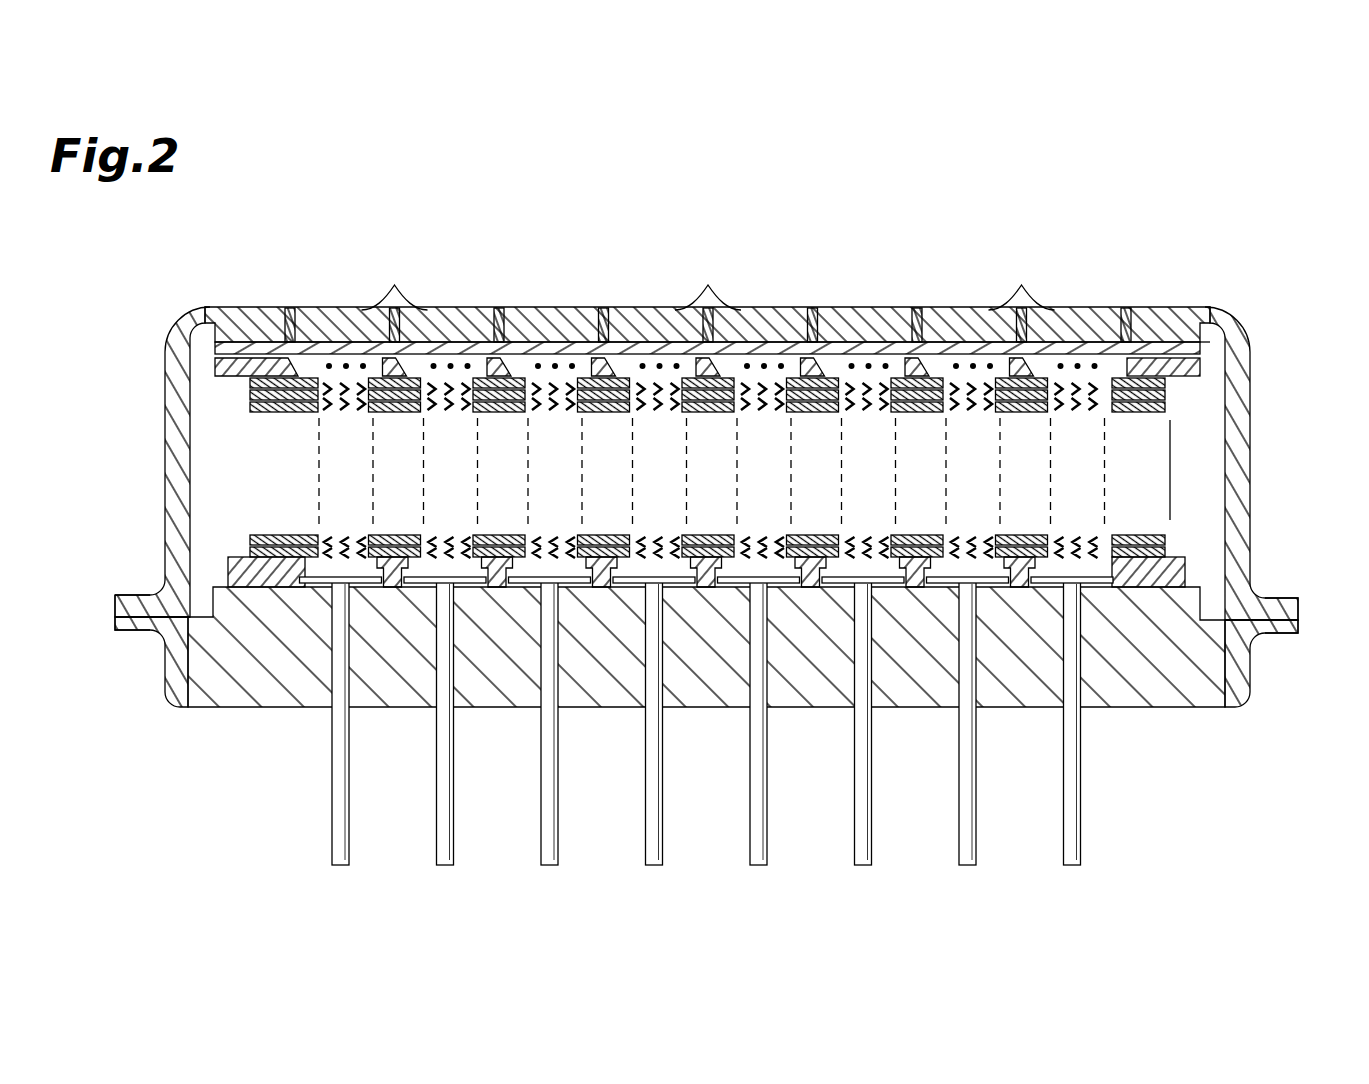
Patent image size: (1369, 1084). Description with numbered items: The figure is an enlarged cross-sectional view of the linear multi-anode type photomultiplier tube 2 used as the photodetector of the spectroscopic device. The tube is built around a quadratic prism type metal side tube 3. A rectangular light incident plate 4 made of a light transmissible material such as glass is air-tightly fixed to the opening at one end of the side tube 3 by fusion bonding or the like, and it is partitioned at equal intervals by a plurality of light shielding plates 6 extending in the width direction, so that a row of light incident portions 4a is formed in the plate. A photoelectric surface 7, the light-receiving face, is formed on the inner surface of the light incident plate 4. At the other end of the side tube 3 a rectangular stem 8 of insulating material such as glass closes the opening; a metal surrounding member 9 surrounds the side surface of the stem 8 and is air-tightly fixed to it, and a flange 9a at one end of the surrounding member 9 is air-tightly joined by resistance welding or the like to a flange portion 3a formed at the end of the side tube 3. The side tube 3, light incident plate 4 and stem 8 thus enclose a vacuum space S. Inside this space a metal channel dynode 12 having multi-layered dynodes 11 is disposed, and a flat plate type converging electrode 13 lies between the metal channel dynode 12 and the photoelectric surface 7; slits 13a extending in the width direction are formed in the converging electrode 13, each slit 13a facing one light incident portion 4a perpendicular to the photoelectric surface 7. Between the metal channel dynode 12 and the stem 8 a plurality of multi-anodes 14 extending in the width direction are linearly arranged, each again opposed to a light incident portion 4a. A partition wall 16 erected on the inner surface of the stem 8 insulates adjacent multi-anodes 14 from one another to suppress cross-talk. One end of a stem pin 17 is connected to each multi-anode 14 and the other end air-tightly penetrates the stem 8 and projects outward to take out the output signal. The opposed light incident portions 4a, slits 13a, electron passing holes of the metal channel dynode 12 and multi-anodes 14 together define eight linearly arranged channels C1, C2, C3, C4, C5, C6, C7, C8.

The photomultiplier tube 2 is at (709, 575).
The side tube 3 is at (160, 388).
The flange portion 3a is at (133, 604).
The light incident plate 4 is at (1193, 310).
The light incident portions 4a is at (708, 281).
The light shielding plates 6 is at (284, 322).
The photoelectric surface 7 is at (1210, 343).
The stem 8 is at (242, 690).
The surrounding member 9 is at (172, 678).
The flange 9a is at (137, 628).
The dynodes 11 is at (247, 393).
The metal channel dynode 12 is at (717, 460).
The converging electrode 13 is at (1202, 366).
The slits 13a is at (299, 366).
The multi-anodes 14 is at (317, 588).
The partition wall 16 is at (385, 588).
The stem pin 17 is at (333, 857).
The vacuum space S is at (1205, 523).
The channel C1 is at (362, 485).
The channel C2 is at (466, 485).
The channel C3 is at (571, 485).
The channel C4 is at (676, 485).
The channel C5 is at (780, 485).
The channel C6 is at (884, 485).
The channel C7 is at (989, 485).
The channel C8 is at (1094, 485).